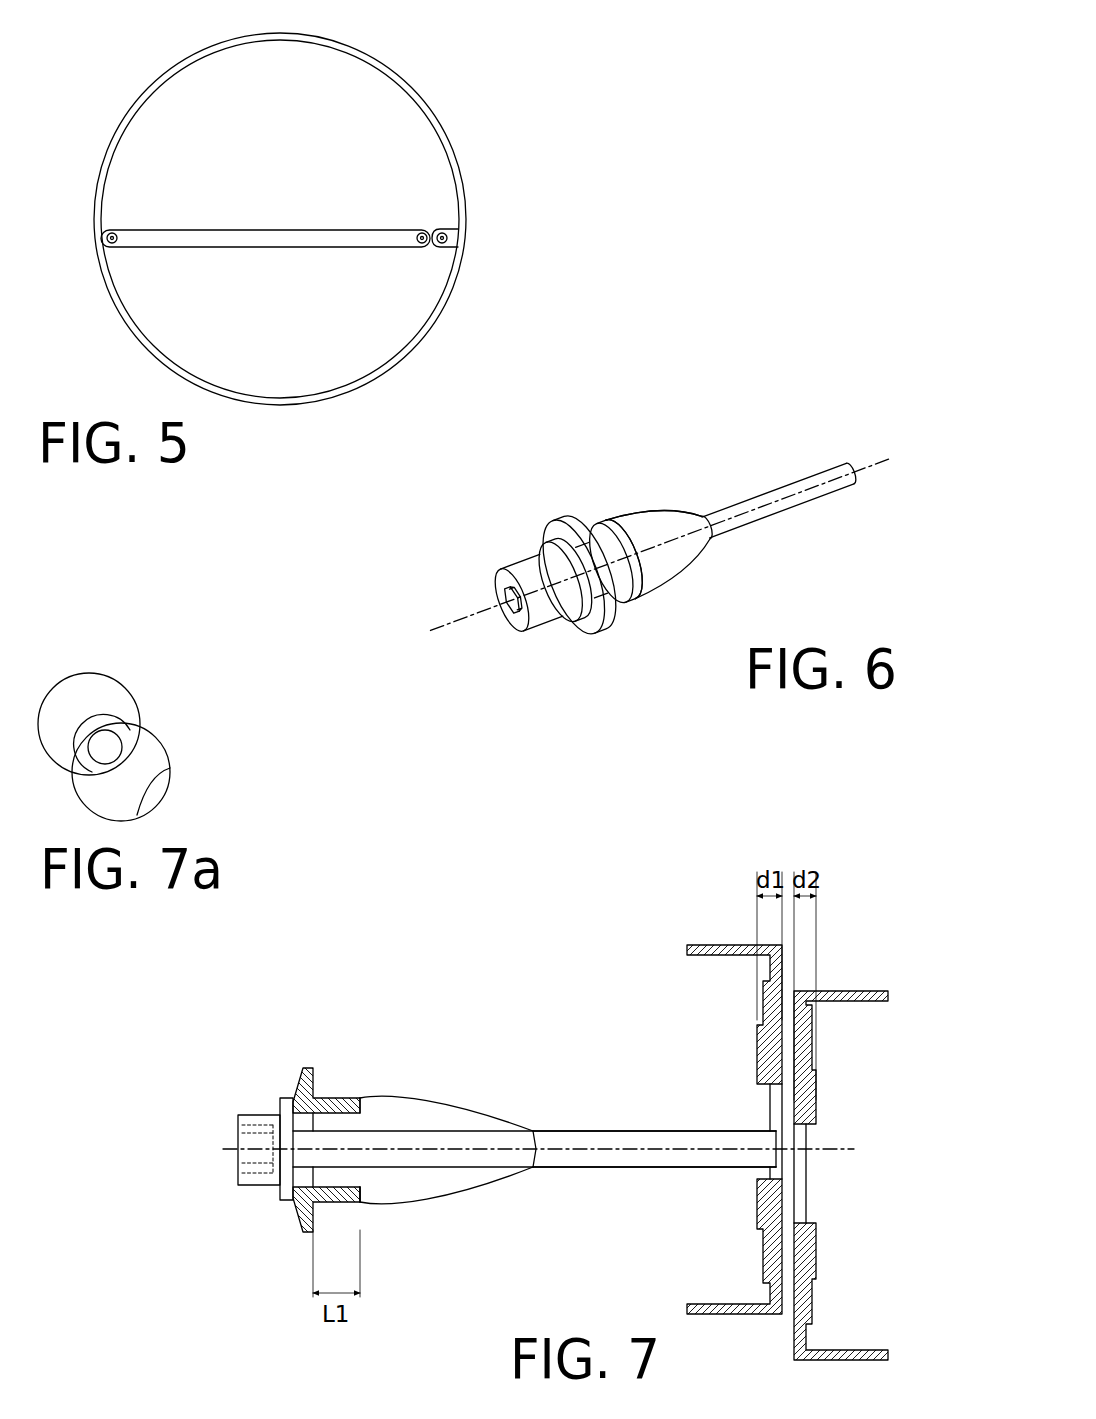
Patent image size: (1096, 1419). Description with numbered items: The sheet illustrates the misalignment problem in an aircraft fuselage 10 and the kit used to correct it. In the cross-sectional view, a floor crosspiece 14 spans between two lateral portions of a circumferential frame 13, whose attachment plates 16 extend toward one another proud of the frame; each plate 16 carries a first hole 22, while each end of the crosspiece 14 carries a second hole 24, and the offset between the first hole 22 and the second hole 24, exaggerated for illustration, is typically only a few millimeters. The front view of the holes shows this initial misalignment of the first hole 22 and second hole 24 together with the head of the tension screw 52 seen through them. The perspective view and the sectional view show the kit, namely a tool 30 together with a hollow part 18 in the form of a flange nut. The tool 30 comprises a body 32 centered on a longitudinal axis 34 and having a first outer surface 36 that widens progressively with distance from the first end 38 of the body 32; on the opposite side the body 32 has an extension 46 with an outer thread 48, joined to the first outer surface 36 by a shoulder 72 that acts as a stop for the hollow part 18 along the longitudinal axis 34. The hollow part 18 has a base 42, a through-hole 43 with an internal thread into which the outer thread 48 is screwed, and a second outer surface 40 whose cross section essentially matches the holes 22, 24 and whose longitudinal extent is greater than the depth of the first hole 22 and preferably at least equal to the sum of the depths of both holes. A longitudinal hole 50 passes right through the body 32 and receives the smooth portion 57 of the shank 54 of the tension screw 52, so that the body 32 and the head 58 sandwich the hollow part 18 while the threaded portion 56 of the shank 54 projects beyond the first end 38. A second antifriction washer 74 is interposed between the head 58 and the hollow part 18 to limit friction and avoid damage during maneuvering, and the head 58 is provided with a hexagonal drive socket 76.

In FIG. 5, the aircraft fuselage 10 is at (289, 204).
In FIG. 5, the circumferential frame 13 is at (408, 87).
In FIG. 5, the floor crosspiece 14 is at (282, 233).
In FIG. 7, the floor crosspiece 14 is at (725, 1129).
In FIG. 5, the attachment plate 16 is at (440, 248).
In FIG. 7, the attachment plate 16 is at (853, 1175).
In FIG. 6, the hollow part 18 is at (719, 522).
In FIG. 7, the hollow part 18 is at (335, 1122).
In FIG. 5, the first hole 22 is at (420, 233).
In FIG. 7a, the first hole 22 is at (78, 683).
In FIG. 7, the first hole 22 is at (757, 1084).
In FIG. 5, the second hole 24 is at (442, 233).
In FIG. 7a, the second hole 24 is at (168, 768).
In FIG. 7, the second hole 24 is at (816, 1138).
In FIG. 6, the tool 30 is at (660, 547).
In FIG. 7, the tool 30 is at (470, 1123).
In FIG. 6, the body 32 is at (665, 542).
In FIG. 7, the body 32 is at (489, 1153).
In FIG. 6, the longitudinal axis 34 is at (661, 545).
In FIG. 7, the longitudinal axis 34 is at (854, 1148).
In FIG. 6, the first outer surface 36 is at (654, 518).
In FIG. 7, the first outer surface 36 is at (468, 1107).
In FIG. 6, the first end 38 is at (708, 527).
In FIG. 7, the first end 38 is at (535, 1130).
In FIG. 6, the second outer surface 40 is at (616, 561).
In FIG. 7, the second outer surface 40 is at (307, 1103).
In FIG. 6, the base 42 is at (628, 556).
In FIG. 7, the base 42 is at (295, 1217).
In FIG. 7, the through-hole 43 is at (347, 1173).
In FIG. 7, the extension 46 is at (325, 1097).
In FIG. 7, the outer thread 48 is at (333, 1197).
In FIG. 7, the longitudinal hole 50 is at (534, 1149).
In FIG. 6, the tension screw 52 is at (525, 594).
In FIG. 7a, the tension screw 52 is at (110, 745).
In FIG. 7, the tension screw 52 is at (222, 1177).
In FIG. 6, the shank 54 is at (780, 500).
In FIG. 7, the shank 54 is at (654, 1150).
In FIG. 6, the threaded portion 56 is at (852, 473).
In FIG. 7, the threaded portion 56 is at (705, 1128).
In FIG. 7, the smooth portion 57 is at (463, 1168).
In FIG. 6, the head 58 is at (579, 574).
In FIG. 7, the head 58 is at (280, 1107).
In FIG. 7, the shoulder 72 is at (350, 1103).
In FIG. 6, the second antifriction washer 74 is at (565, 580).
In FIG. 6, the hexagonal drive socket 76 is at (513, 600).
In FIG. 7, the hexagonal drive socket 76 is at (247, 1125).